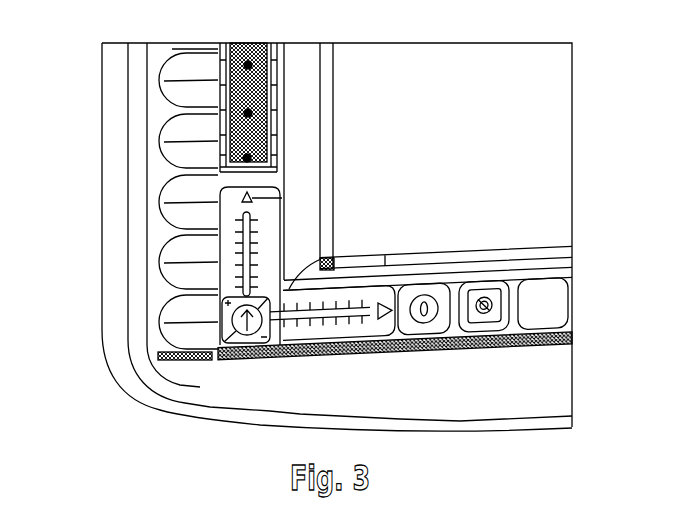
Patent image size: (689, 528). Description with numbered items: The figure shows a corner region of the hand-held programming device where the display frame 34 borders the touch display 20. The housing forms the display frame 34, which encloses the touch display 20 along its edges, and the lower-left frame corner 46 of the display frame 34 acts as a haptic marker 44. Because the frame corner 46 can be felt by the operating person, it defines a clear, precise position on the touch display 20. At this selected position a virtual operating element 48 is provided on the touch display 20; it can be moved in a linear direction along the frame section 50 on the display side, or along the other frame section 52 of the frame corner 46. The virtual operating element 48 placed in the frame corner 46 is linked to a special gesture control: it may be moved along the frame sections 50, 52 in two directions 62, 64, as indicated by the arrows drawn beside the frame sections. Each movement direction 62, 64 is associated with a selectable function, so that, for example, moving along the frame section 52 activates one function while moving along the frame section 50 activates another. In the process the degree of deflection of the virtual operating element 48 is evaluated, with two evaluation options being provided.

The touch display 20 is at (471, 180).
The display frame 34 is at (102, 227).
The haptic marker 44 is at (291, 359).
The frame corner 46 is at (219, 360).
The virtual operating element 48 is at (333, 262).
The frame section 50 is at (284, 178).
The frame section 52 is at (350, 354).
The movement direction 62 is at (385, 322).
The movement direction 64 is at (284, 204).